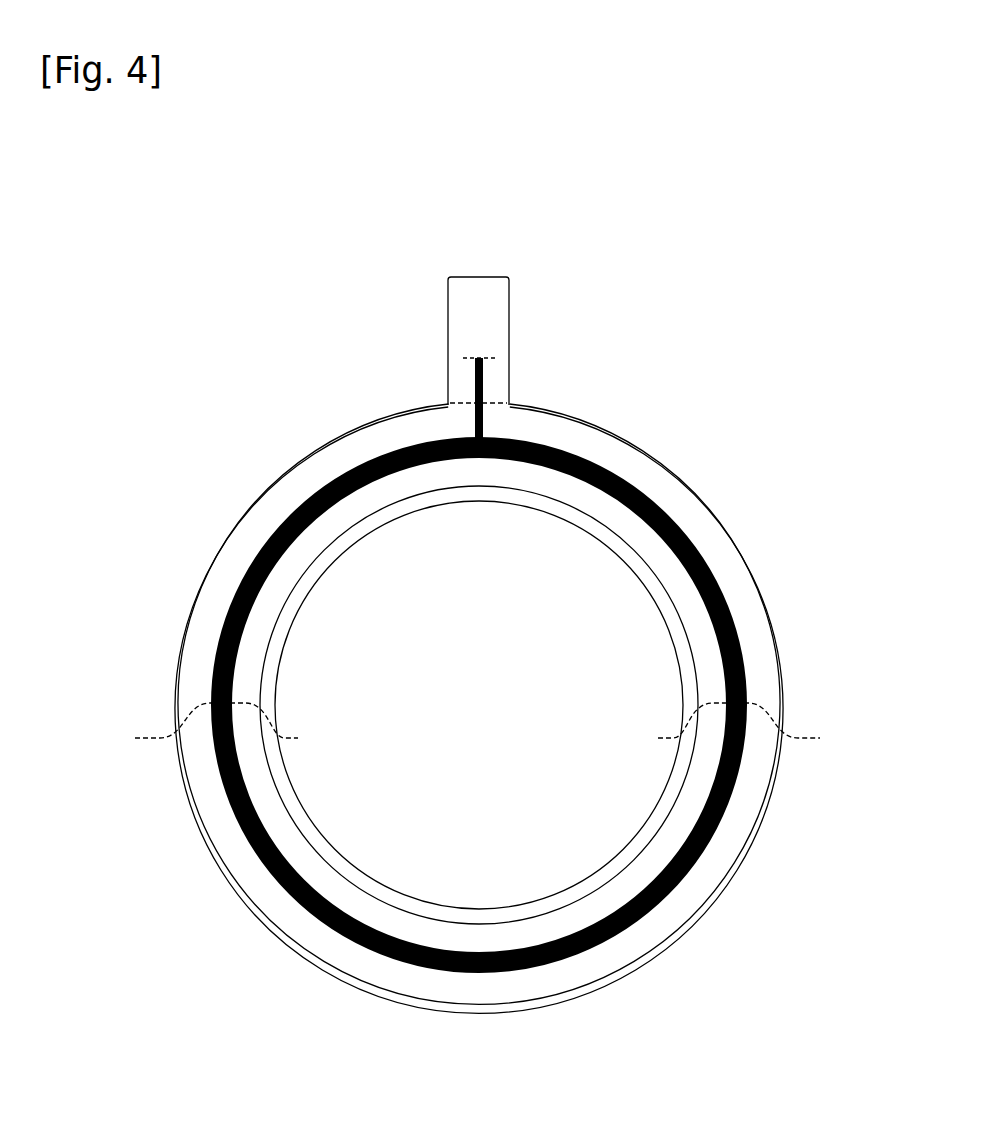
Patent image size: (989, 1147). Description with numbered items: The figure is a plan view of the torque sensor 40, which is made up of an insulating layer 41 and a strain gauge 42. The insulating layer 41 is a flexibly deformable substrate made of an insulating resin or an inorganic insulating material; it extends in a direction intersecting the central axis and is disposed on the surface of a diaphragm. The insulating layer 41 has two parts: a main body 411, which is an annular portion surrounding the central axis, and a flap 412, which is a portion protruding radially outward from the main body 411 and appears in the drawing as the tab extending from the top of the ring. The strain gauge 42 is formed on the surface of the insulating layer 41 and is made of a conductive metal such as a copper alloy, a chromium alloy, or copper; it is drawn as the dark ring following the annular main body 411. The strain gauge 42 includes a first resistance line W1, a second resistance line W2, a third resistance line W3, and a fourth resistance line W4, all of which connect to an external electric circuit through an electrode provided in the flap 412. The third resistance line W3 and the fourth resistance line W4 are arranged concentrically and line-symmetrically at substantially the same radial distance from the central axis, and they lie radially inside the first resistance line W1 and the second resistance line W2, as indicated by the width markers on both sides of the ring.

The torque sensor 40 is at (572, 306).
The insulating layer 41 is at (263, 270).
The main body 411 is at (358, 452).
The flap 412 is at (468, 312).
The strain gauge 42 is at (614, 950).
The first resistance line W1 is at (789, 727).
The second resistance line W2 is at (167, 727).
The third resistance line W3 is at (677, 727).
The fourth resistance line W4 is at (279, 727).